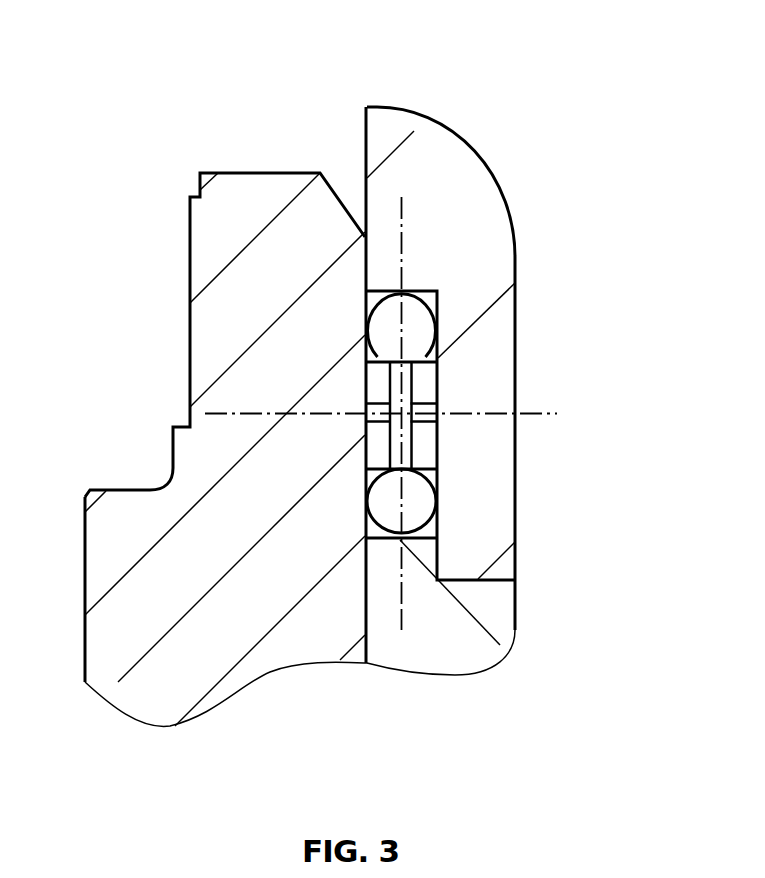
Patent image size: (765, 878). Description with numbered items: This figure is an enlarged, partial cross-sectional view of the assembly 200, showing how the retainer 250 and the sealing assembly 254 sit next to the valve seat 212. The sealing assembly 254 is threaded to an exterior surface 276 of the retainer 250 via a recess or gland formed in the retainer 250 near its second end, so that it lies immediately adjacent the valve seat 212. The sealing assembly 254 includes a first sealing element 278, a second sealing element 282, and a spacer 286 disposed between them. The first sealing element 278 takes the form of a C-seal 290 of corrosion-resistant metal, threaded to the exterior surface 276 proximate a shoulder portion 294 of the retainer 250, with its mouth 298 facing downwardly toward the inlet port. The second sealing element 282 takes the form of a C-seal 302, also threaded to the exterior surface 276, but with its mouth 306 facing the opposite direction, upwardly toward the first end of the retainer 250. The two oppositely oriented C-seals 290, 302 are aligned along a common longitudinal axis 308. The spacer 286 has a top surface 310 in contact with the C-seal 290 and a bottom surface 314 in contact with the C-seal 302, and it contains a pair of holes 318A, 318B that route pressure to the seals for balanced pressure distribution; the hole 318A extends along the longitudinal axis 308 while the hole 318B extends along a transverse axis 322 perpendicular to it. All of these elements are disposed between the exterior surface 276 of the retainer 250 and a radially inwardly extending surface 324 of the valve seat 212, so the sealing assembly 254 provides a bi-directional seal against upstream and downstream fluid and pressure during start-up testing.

The assembly 200 is at (429, 97).
The valve seat 212 is at (232, 247).
The retainer 250 is at (480, 228).
The sealing assembly 254 is at (458, 416).
The exterior surface 276 is at (420, 323).
The first sealing element 278 is at (406, 288).
The second sealing element 282 is at (398, 548).
The spacer 286 is at (444, 386).
The C-seal 290 is at (406, 288).
The shoulder portion 294 is at (384, 291).
The mouth 298 is at (408, 305).
The C-seal 302 is at (398, 548).
The mouth 306 is at (437, 500).
The longitudinal axis 308 is at (402, 618).
The top surface 310 is at (372, 367).
The bottom surface 314 is at (388, 468).
The hole 318A is at (407, 377).
The hole 318B is at (420, 421).
The transverse axis 322 is at (240, 413).
The radially inwardly extending surface 324 is at (365, 503).